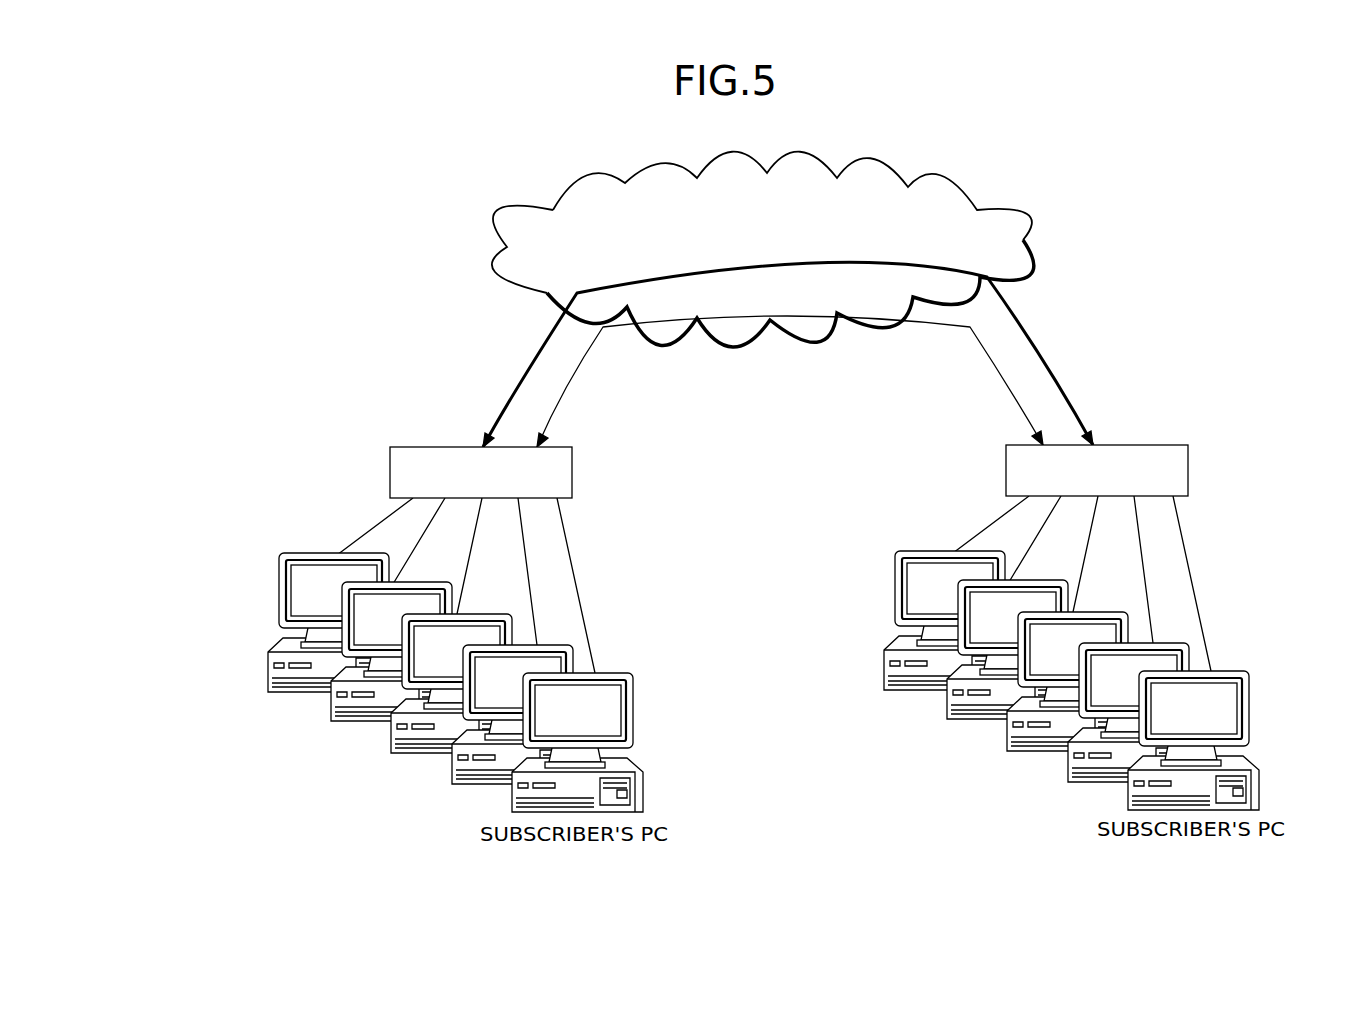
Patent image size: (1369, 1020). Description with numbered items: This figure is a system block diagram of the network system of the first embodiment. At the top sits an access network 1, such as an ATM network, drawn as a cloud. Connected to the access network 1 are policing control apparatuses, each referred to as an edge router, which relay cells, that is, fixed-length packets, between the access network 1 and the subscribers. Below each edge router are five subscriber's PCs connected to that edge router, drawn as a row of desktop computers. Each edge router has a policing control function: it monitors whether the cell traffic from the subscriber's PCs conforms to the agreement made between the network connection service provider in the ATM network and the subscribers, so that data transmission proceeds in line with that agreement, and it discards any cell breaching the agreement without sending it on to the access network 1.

The access network 1 is at (922, 178).